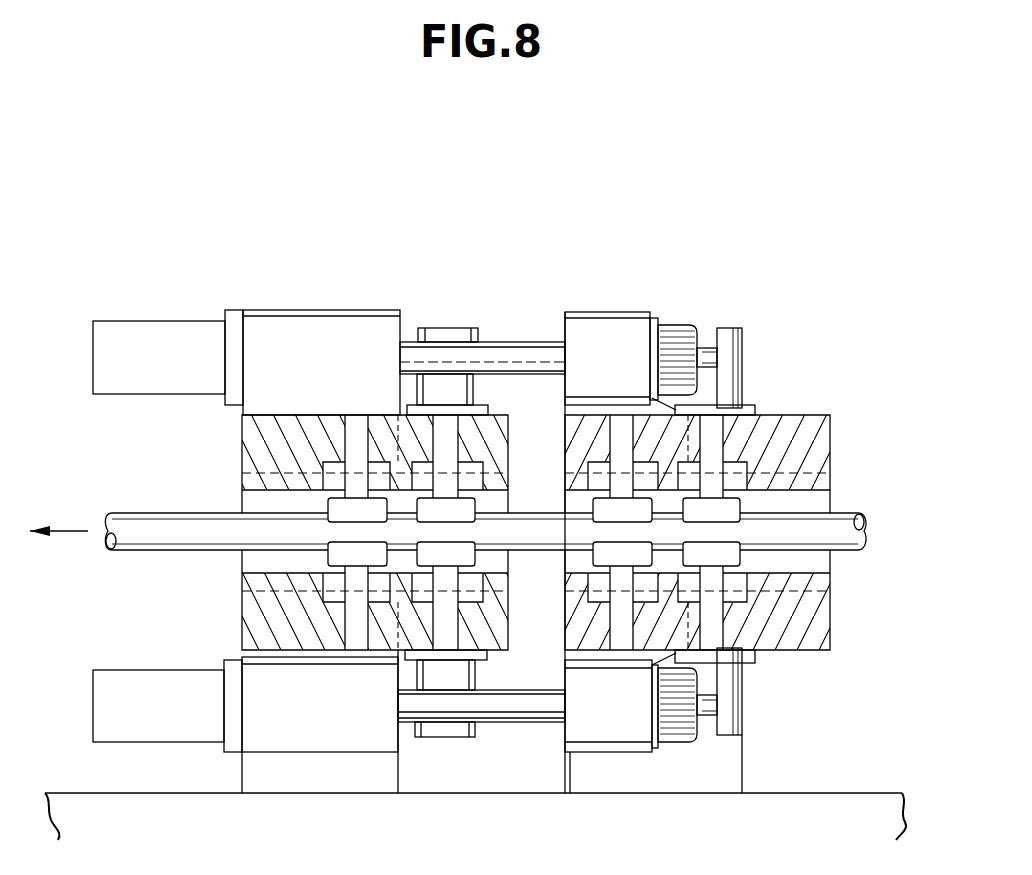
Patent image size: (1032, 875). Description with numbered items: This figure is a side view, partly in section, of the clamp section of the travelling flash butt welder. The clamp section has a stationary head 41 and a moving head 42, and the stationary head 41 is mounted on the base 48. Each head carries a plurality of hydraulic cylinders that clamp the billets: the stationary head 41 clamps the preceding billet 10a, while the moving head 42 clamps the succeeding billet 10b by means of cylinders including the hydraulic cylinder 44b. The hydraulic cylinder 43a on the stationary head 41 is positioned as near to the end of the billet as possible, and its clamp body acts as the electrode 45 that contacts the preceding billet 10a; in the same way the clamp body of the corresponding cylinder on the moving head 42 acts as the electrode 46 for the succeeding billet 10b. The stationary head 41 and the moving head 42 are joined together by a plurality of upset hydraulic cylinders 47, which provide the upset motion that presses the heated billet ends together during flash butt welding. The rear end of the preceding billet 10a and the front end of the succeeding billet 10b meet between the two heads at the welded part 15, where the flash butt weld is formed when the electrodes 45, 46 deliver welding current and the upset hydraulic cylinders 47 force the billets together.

The preceding billet 10a is at (170, 525).
The succeeding billet 10b is at (845, 527).
The welded part 15 is at (537, 550).
The stationary head 41 is at (242, 440).
The moving head 42 is at (832, 438).
The hydraulic cylinder 43a is at (457, 328).
The hydraulic cylinder 44b is at (744, 347).
The electrode 45 is at (468, 495).
The electrode 46 is at (638, 508).
The upset hydraulic cylinder 47 is at (185, 338).
The base 48 is at (843, 826).